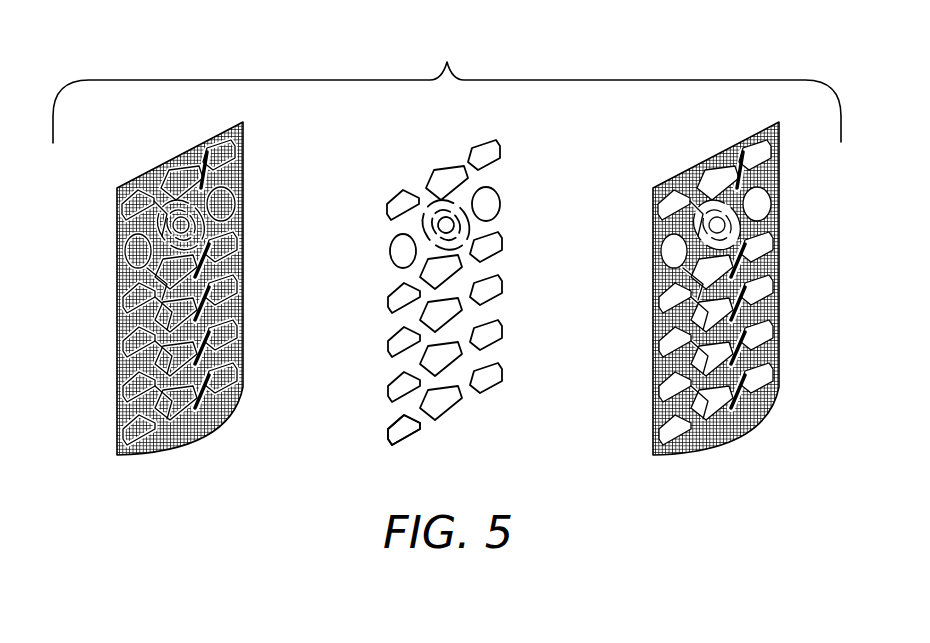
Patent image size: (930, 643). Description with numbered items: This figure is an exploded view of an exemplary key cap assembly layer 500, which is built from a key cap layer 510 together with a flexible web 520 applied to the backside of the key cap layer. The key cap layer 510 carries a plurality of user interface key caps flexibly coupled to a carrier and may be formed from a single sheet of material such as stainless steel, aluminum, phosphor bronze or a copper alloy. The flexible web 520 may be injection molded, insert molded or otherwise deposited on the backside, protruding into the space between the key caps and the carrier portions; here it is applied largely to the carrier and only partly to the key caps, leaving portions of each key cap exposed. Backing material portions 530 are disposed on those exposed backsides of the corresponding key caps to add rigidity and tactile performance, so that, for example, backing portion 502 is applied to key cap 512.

The key cap assembly layer 500 is at (447, 88).
The key cap layer 510 is at (118, 218).
The key cap 512 is at (118, 440).
The backing material portions 530 is at (513, 128).
The backing portion 502 is at (395, 437).
The flexible web 520 is at (658, 437).